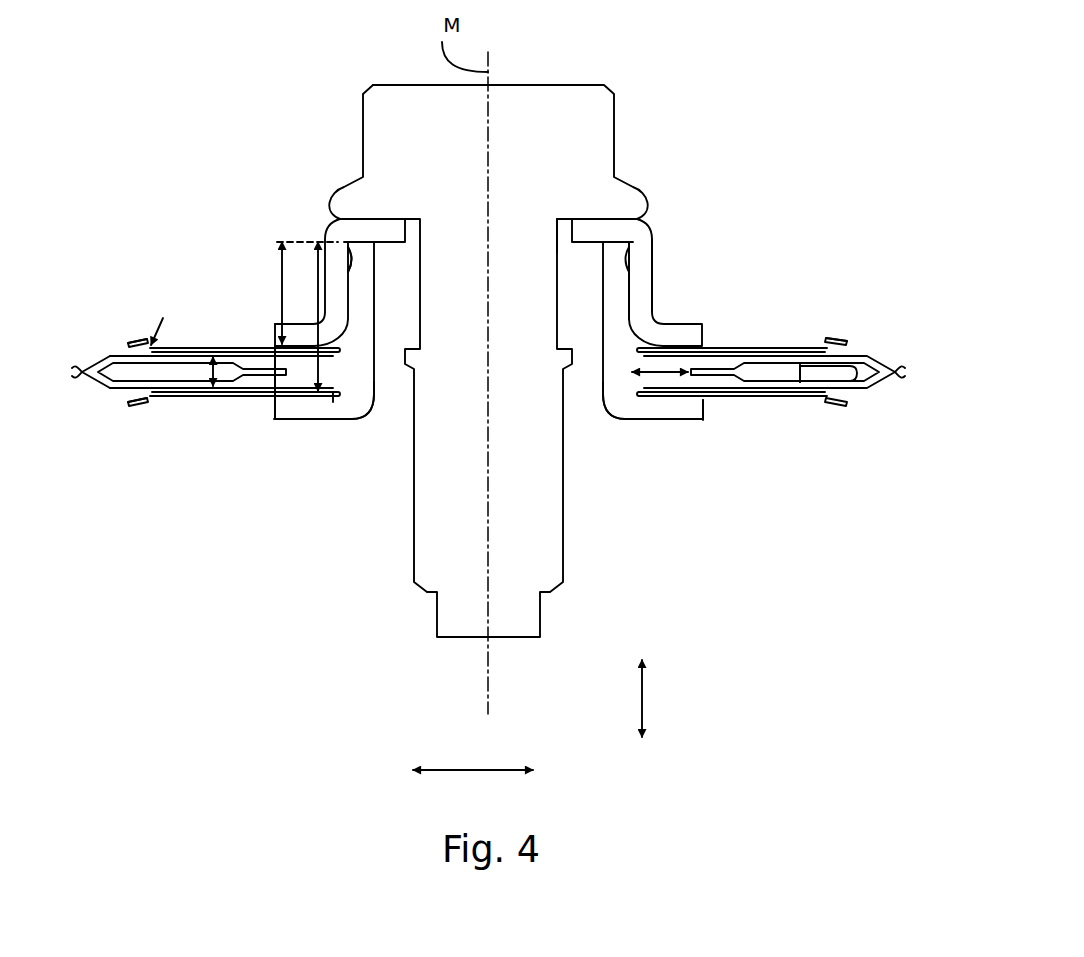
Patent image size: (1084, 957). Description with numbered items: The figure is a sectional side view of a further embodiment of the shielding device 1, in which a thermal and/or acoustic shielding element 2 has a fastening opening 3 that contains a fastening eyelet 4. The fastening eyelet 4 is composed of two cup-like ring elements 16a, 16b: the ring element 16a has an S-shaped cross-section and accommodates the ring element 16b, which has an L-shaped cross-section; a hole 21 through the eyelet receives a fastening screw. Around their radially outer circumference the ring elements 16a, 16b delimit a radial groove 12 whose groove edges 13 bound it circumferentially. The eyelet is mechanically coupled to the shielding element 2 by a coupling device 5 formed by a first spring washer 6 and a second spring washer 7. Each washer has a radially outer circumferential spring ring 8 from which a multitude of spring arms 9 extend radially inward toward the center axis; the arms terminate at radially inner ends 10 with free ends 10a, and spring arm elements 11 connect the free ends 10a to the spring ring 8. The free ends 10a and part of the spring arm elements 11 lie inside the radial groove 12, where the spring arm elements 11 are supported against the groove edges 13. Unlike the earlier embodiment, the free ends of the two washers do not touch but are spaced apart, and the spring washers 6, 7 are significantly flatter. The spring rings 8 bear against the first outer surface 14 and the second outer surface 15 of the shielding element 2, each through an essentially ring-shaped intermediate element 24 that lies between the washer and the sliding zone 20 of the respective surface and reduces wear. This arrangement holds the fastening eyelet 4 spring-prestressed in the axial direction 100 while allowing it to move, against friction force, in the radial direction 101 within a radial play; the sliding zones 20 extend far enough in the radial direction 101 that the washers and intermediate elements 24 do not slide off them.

The shielding device 1 is at (828, 252).
The shielding element 2 is at (885, 366).
The fastening opening 3 is at (333, 397).
The fastening eyelet 4 is at (328, 413).
The coupling device 5 is at (737, 393).
The first spring washer 6 is at (825, 395).
The second spring washer 7 is at (843, 340).
The spring ring 8 is at (143, 340).
The spring arms 9 is at (230, 347).
The radially inner ends 10 is at (337, 374).
The free ends 10a is at (333, 388).
The spring arm elements 11 is at (234, 347).
The radial groove 12 is at (278, 388).
The groove edges 13 is at (262, 347).
The first outer surface 14 is at (127, 355).
The second outer surface 15 is at (130, 388).
The ring element 16a is at (647, 248).
The ring element 16b is at (625, 405).
The sliding zone 20 is at (845, 375).
The hole 21 is at (559, 224).
The intermediate element 24 is at (712, 353).
The axial direction 100 is at (644, 693).
The radial direction 101 is at (473, 770).